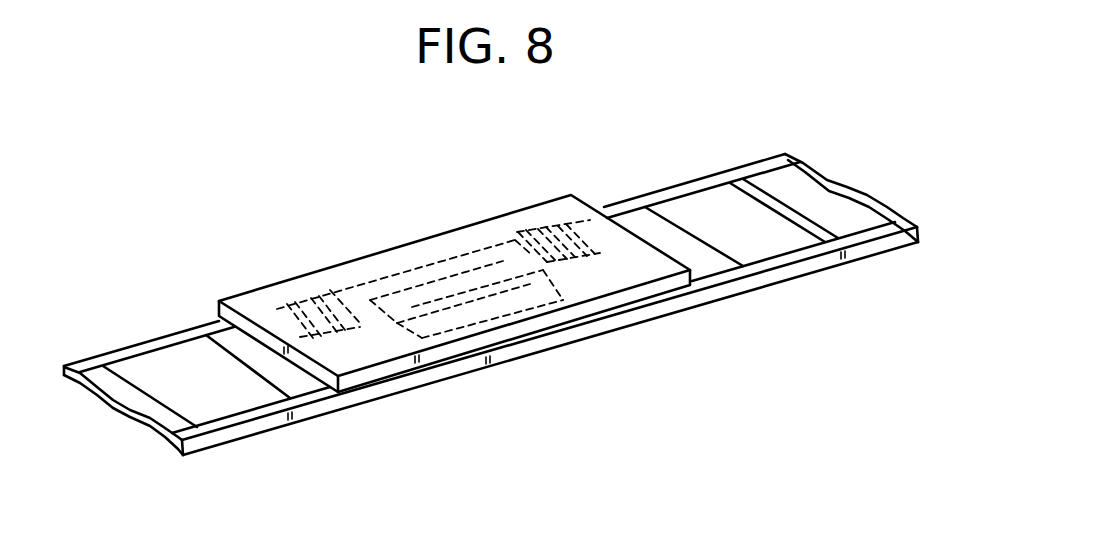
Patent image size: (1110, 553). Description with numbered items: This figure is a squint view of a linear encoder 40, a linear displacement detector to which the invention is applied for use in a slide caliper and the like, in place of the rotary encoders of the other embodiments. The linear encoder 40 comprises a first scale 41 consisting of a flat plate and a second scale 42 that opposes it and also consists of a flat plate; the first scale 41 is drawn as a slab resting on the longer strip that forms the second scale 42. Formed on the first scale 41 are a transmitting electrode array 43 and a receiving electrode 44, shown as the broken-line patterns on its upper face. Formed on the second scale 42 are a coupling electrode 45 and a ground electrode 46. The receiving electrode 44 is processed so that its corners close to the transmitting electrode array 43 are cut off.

The linear encoder 40 is at (454, 295).
The first scale 41 is at (360, 360).
The second scale 42 is at (232, 437).
The transmitting electrode array 43 is at (528, 237).
The receiving electrode 44 is at (525, 303).
The coupling electrode 45 is at (787, 245).
The ground electrode 46 is at (707, 268).